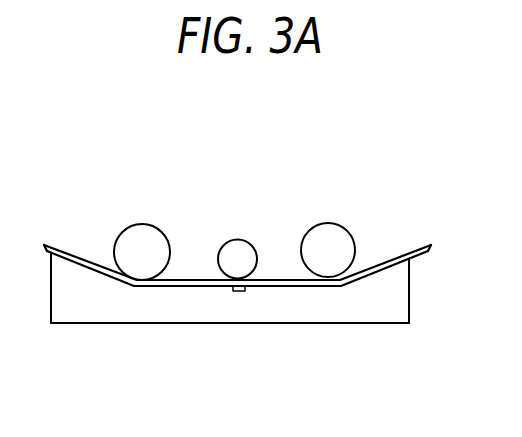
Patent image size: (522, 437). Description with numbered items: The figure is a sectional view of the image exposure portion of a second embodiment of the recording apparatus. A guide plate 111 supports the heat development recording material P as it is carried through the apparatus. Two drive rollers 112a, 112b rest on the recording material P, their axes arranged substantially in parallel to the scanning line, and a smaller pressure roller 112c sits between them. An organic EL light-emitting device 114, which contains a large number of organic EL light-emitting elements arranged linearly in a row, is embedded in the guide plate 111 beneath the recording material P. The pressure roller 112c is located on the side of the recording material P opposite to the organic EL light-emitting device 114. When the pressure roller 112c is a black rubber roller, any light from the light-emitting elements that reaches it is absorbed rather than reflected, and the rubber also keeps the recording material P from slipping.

The guide plate 111 is at (313, 308).
The drive roller 112a is at (340, 242).
The drive roller 112b is at (150, 238).
The pressure roller 112c is at (243, 247).
The organic EL light-emitting device 114 is at (238, 292).
The heat development recording material P is at (425, 258).